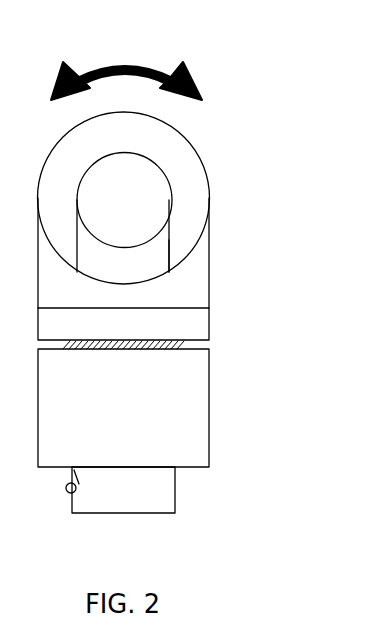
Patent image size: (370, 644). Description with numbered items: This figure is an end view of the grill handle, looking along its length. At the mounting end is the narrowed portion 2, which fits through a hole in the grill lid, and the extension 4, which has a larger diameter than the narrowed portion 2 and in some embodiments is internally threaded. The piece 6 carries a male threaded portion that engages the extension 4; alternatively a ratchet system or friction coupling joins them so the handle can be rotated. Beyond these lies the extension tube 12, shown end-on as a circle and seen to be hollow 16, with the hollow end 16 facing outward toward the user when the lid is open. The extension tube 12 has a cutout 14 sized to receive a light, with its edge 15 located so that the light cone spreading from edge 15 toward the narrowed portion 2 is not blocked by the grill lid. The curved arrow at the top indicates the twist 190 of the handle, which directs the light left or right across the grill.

The narrowed portion 2 is at (175, 498).
The extension 4 is at (202, 393).
The piece 6 is at (210, 318).
The extension tube 12 is at (188, 198).
The cutout 14 is at (145, 265).
The edge 15 is at (127, 272).
The hollow end 16 is at (123, 195).
The twisting action 190 is at (130, 62).